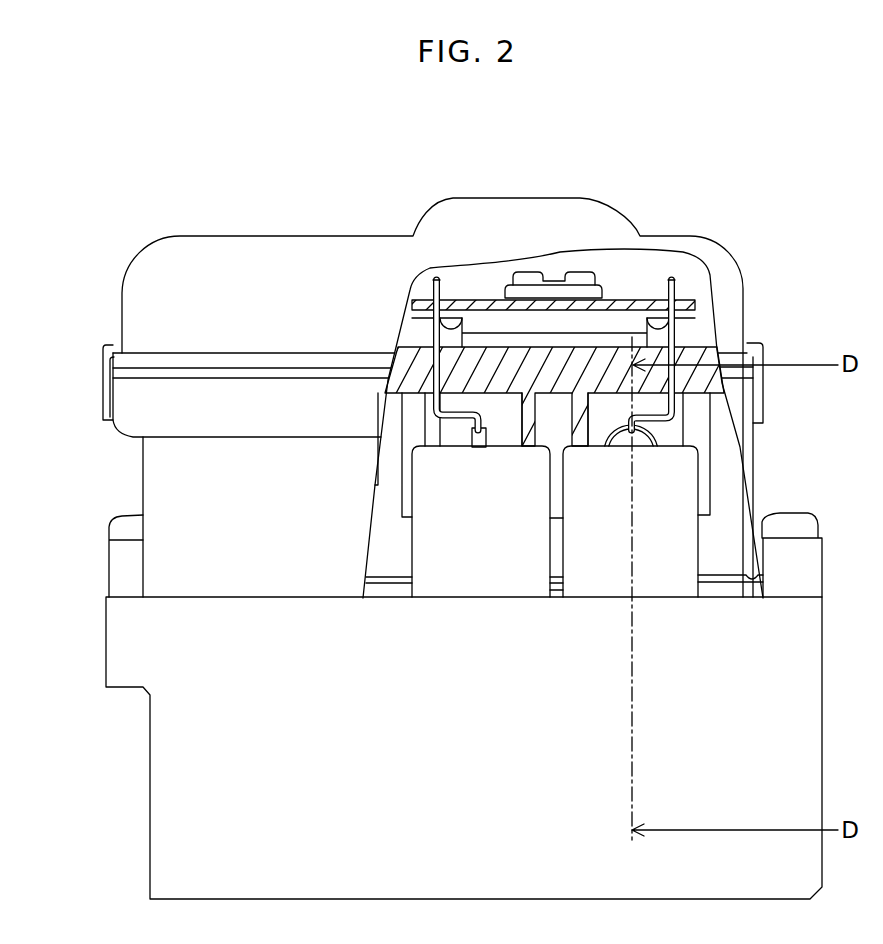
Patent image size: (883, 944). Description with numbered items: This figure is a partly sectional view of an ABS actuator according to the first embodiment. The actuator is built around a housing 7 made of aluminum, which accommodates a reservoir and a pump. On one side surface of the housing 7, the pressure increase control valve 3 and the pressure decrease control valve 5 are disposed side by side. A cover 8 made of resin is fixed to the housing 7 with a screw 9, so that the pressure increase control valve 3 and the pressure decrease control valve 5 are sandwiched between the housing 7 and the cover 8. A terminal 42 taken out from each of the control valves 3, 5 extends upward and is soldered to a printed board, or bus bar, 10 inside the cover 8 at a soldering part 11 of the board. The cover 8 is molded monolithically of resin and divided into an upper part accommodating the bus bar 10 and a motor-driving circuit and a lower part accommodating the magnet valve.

The pressure increase control valve 3 is at (677, 489).
The pressure decrease control valve 5 is at (440, 488).
The housing 7 is at (790, 733).
The cover 8 is at (700, 372).
The screw 9 is at (123, 524).
The printed board (bus bar) 10 is at (630, 308).
The soldering part 11 is at (680, 295).
The terminal 42 is at (433, 281).